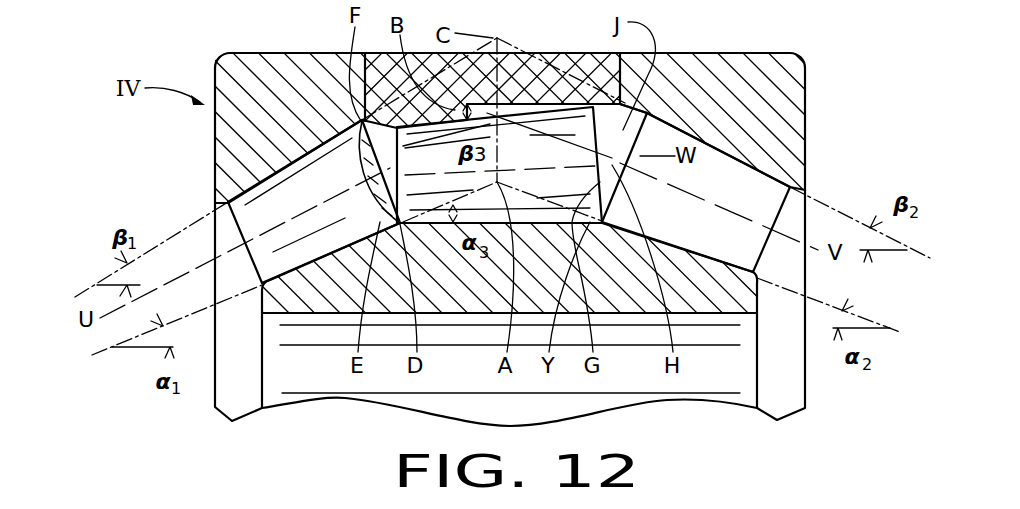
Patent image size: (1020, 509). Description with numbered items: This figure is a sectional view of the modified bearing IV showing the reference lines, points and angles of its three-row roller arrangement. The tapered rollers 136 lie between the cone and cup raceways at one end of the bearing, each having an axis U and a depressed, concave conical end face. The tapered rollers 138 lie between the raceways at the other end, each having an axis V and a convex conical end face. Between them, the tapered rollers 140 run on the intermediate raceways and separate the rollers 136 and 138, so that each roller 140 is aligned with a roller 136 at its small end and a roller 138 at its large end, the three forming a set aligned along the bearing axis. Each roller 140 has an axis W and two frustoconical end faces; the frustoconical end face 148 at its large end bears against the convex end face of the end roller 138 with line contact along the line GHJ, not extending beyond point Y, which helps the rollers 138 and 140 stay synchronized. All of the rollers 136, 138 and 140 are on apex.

The tapered rollers 136 is at (266, 188).
The tapered rollers 138 is at (733, 174).
The tapered rollers 140 is at (525, 107).
The frustoconical end face 148 is at (603, 108).